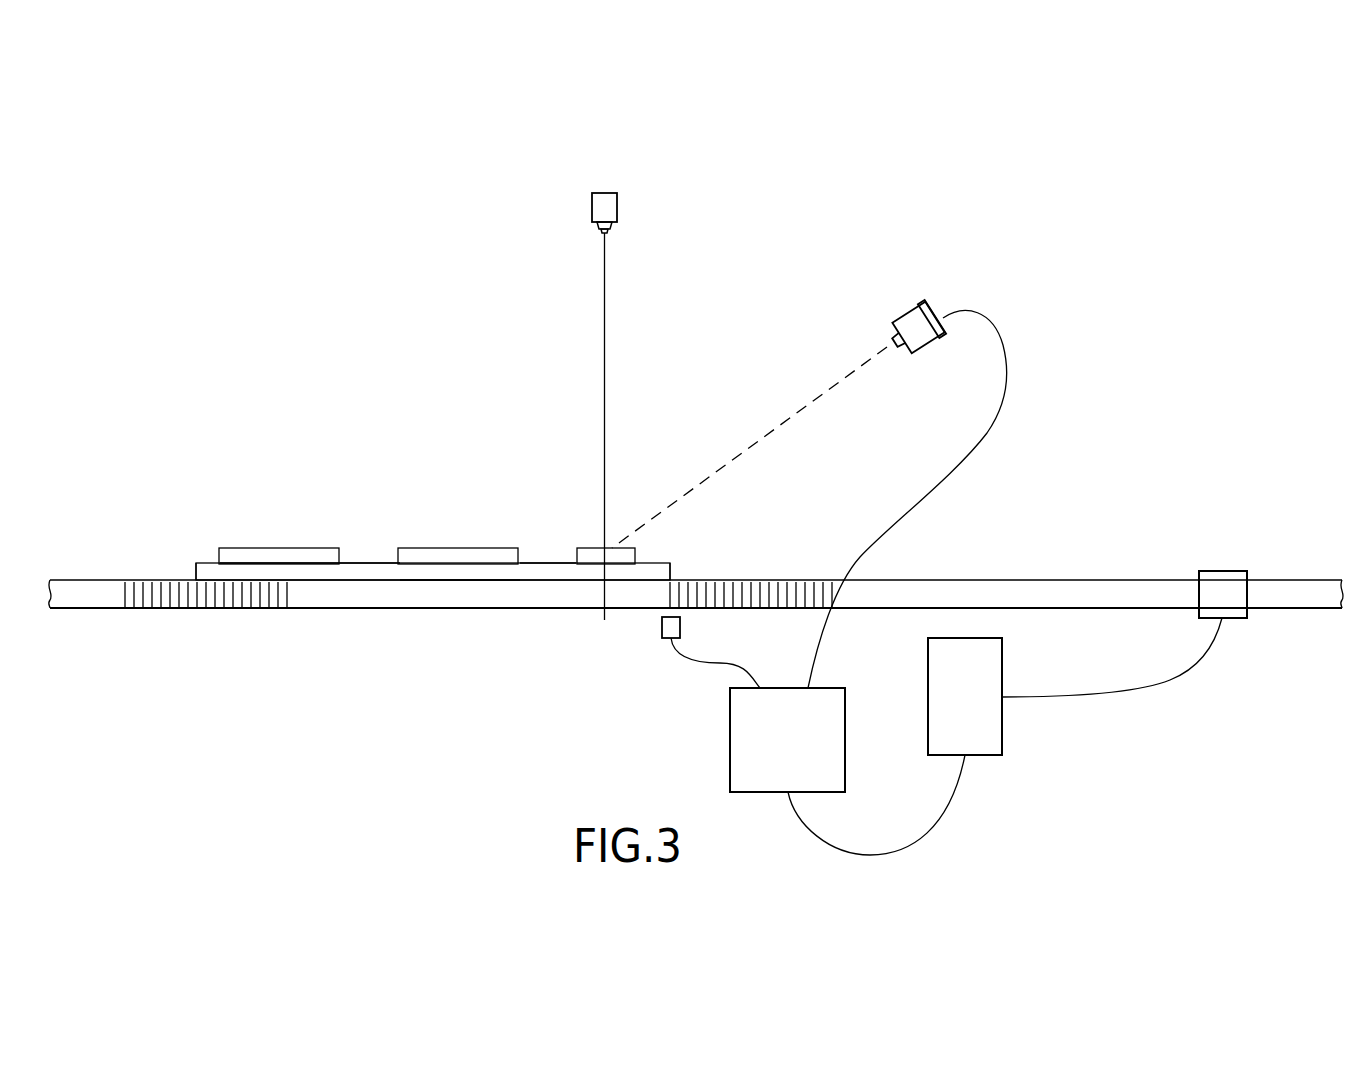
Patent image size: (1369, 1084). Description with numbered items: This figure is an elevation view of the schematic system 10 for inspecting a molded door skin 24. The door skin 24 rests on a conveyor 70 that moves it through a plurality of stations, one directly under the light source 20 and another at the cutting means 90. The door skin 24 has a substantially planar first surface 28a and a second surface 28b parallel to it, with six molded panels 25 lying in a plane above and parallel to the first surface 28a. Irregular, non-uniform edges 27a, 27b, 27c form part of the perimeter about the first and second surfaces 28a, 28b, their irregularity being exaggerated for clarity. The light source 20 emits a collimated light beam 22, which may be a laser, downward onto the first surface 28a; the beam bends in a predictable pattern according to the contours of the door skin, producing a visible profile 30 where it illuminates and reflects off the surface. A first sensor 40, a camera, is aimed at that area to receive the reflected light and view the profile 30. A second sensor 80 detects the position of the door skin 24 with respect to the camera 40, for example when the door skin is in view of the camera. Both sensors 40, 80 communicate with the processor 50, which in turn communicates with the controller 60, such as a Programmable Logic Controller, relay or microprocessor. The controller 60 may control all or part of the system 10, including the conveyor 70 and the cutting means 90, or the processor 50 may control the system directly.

The system 10 is at (1123, 232).
The light source 20 is at (617, 205).
The collimated light beam 22 is at (615, 364).
The door skin 24 is at (209, 551).
The molded panels 25 is at (327, 538).
The edge 27a is at (672, 572).
The edge 27b is at (302, 572).
The edge 27c is at (196, 575).
The first surface 28a is at (535, 563).
The second surface 28b is at (472, 580).
The profile 30 is at (618, 555).
The first sensor 40 is at (908, 312).
The processor 50 is at (773, 755).
The controller 60 is at (951, 713).
The conveyor 70 is at (127, 592).
The second sensor 80 is at (648, 632).
The cutting means 90 is at (1209, 609).